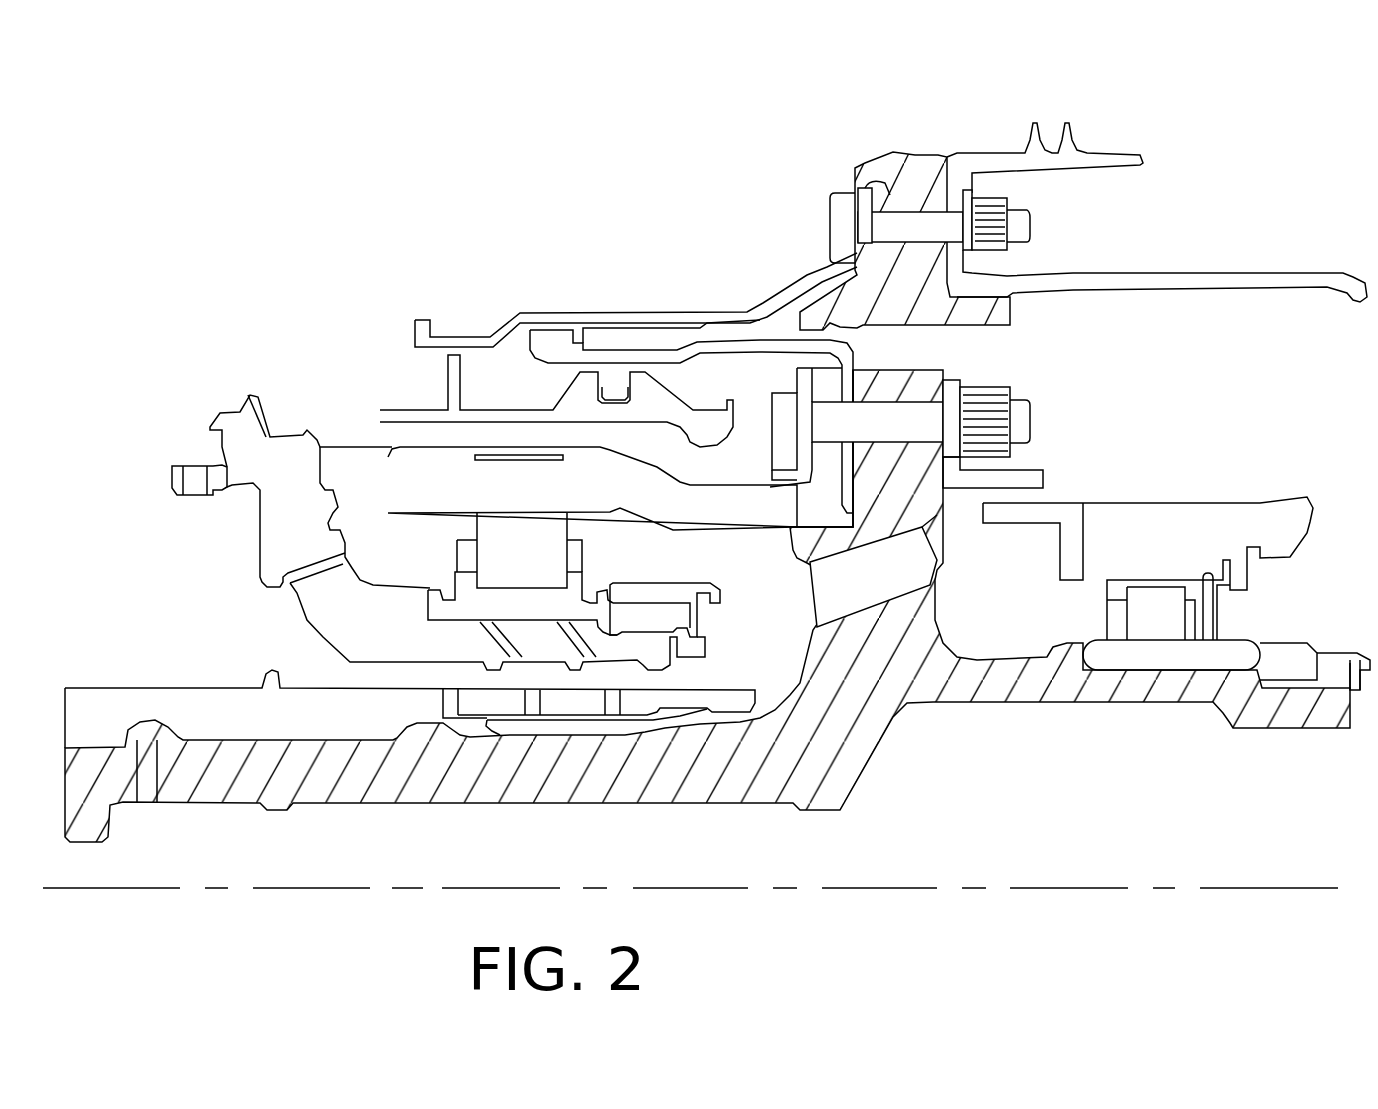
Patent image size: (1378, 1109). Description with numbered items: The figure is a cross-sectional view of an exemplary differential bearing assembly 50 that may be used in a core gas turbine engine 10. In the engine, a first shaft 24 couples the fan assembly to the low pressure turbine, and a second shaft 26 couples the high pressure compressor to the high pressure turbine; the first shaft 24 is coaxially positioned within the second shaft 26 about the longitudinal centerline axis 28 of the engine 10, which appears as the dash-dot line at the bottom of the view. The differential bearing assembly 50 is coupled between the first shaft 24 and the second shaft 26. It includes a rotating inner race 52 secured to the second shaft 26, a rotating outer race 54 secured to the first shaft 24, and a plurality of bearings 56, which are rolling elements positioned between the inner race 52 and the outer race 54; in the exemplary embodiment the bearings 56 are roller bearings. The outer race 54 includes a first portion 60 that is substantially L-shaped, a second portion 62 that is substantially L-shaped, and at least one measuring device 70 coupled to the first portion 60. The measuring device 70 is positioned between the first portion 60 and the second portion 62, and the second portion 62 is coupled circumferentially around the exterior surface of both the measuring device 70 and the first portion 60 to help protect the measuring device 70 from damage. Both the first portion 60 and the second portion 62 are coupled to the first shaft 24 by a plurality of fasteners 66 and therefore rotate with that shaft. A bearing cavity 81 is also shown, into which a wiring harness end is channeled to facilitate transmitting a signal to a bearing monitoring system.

The core gas turbine engine 10 is at (1172, 122).
The first shaft 24 is at (922, 345).
The second shaft 26 is at (340, 613).
The longitudinal centerline axis 28 is at (1077, 888).
The differential bearing assembly 50 is at (700, 573).
The inner race 52 is at (575, 600).
The outer race 54 is at (378, 487).
The bearings 56 is at (537, 568).
The first portion 60 is at (823, 488).
The second portion 62 is at (653, 472).
The fasteners 66 is at (900, 435).
The measuring device 70 is at (498, 458).
The bearing cavity 81 is at (1190, 460).